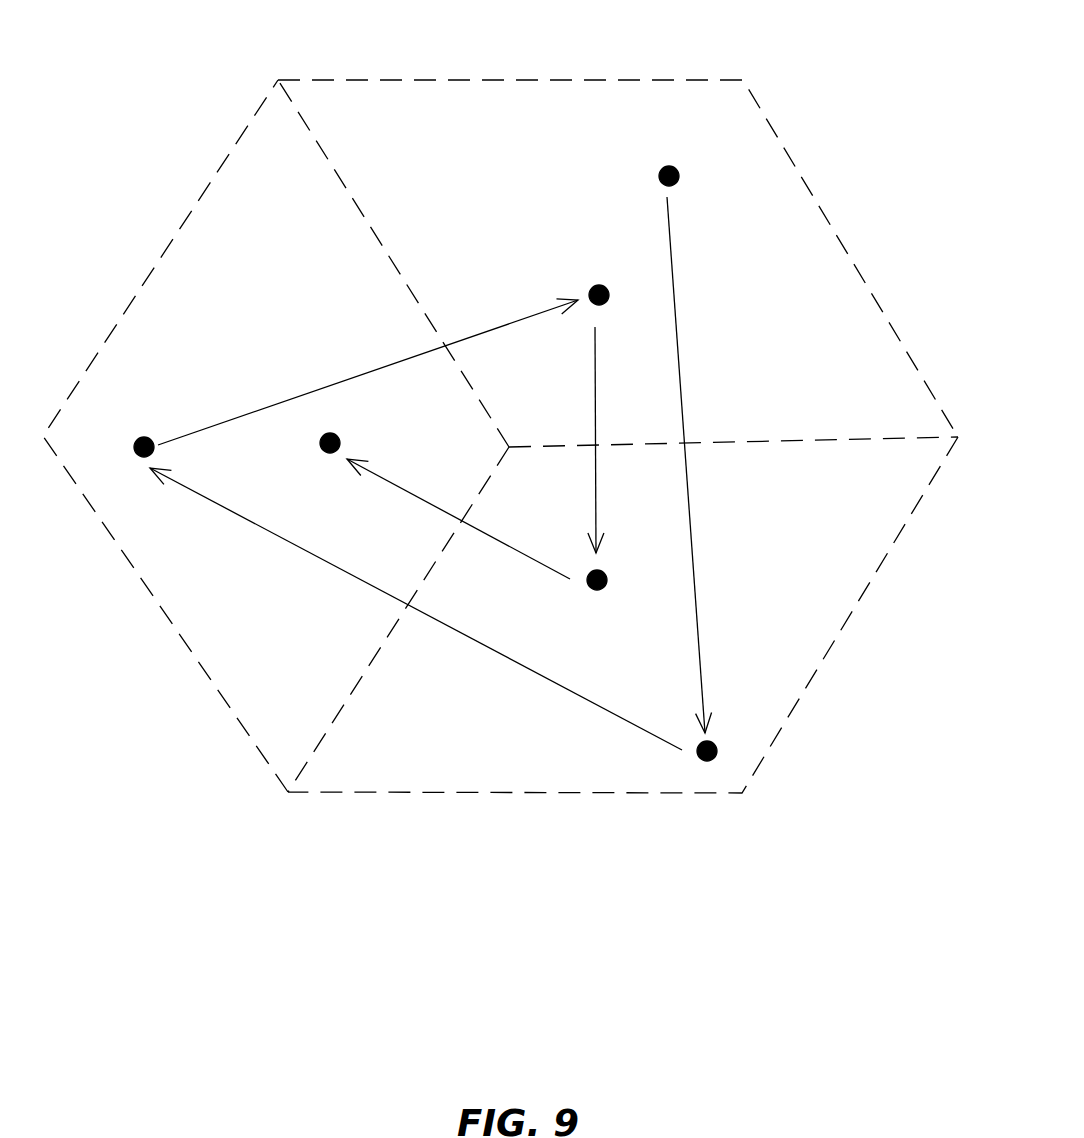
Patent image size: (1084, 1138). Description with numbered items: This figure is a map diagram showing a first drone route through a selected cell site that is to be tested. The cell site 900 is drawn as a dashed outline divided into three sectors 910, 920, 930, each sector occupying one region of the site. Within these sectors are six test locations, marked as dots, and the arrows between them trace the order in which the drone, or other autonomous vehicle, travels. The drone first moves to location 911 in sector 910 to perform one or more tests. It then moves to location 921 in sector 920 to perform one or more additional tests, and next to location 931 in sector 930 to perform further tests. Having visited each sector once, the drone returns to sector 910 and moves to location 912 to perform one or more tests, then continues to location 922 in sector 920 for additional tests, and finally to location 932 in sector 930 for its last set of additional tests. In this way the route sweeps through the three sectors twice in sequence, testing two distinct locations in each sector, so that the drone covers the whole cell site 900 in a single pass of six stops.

The cell site 900 is at (500, 413).
The sector 910 is at (760, 200).
The sector 920 is at (848, 595).
The sector 930 is at (210, 645).
The location 911 is at (674, 167).
The location 912 is at (600, 278).
The location 921 is at (720, 740).
The location 922 is at (607, 588).
The location 931 is at (133, 438).
The location 932 is at (340, 430).